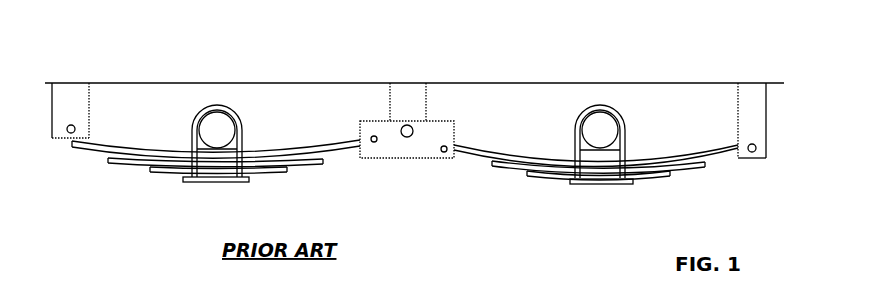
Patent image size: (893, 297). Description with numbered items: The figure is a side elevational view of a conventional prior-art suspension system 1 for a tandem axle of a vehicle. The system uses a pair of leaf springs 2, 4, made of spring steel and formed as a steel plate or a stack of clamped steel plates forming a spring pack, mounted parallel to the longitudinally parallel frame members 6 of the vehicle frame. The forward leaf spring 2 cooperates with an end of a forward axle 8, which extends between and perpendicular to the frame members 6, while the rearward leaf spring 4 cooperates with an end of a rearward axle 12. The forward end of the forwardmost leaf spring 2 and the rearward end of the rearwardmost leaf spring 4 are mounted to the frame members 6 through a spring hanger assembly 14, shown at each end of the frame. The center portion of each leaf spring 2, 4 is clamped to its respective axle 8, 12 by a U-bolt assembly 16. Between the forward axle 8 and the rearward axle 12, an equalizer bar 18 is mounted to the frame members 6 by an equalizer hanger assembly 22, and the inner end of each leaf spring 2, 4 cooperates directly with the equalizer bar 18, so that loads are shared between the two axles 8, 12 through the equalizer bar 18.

The suspension system 1 is at (752, 60).
The forward leaf spring 2 is at (494, 161).
The rearward leaf spring 4 is at (137, 167).
The frame member 6 is at (595, 82).
The forward axle 8 is at (600, 130).
The rearward axle 12 is at (213, 131).
The spring hanger assembly 14 is at (53, 132).
The U-bolt assembly 16 is at (193, 148).
The equalizer bar 18 is at (402, 150).
The equalizer hanger assembly 22 is at (413, 107).